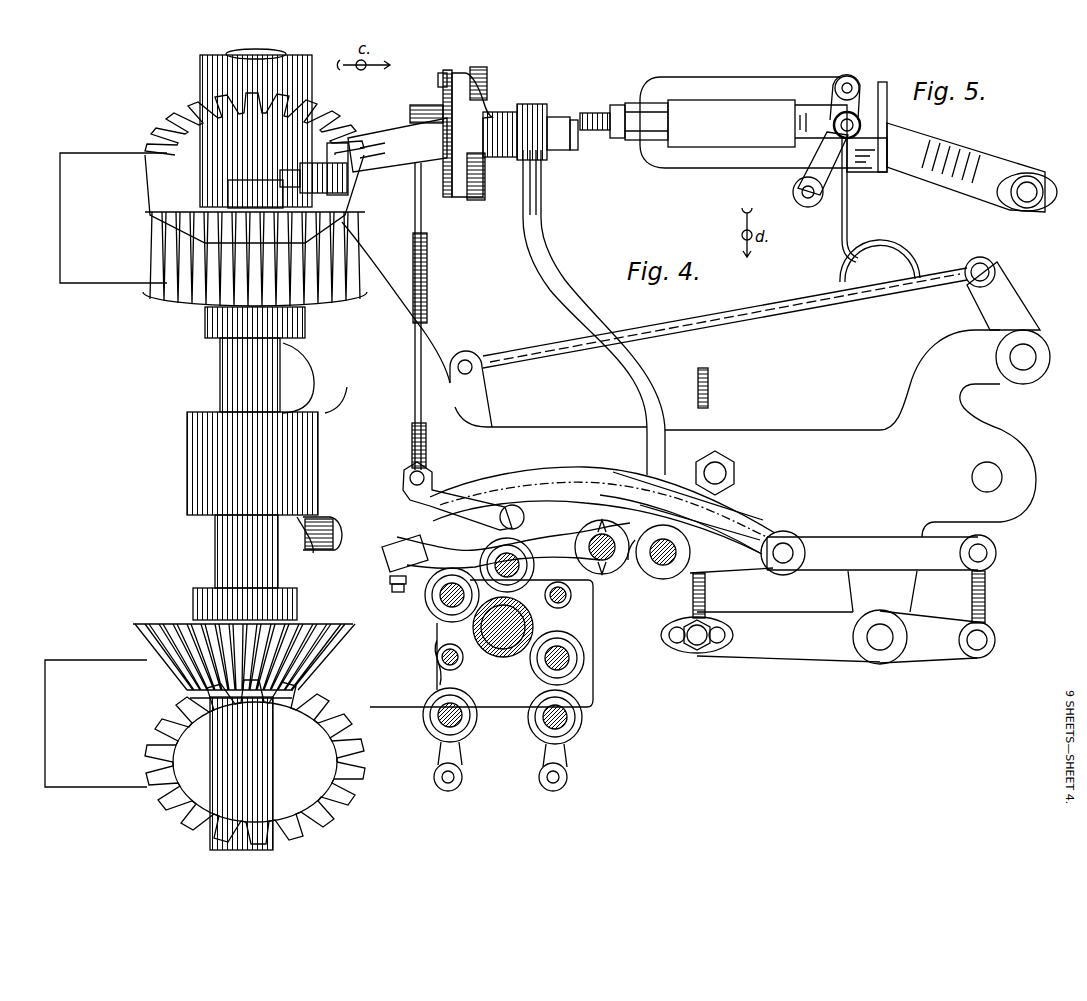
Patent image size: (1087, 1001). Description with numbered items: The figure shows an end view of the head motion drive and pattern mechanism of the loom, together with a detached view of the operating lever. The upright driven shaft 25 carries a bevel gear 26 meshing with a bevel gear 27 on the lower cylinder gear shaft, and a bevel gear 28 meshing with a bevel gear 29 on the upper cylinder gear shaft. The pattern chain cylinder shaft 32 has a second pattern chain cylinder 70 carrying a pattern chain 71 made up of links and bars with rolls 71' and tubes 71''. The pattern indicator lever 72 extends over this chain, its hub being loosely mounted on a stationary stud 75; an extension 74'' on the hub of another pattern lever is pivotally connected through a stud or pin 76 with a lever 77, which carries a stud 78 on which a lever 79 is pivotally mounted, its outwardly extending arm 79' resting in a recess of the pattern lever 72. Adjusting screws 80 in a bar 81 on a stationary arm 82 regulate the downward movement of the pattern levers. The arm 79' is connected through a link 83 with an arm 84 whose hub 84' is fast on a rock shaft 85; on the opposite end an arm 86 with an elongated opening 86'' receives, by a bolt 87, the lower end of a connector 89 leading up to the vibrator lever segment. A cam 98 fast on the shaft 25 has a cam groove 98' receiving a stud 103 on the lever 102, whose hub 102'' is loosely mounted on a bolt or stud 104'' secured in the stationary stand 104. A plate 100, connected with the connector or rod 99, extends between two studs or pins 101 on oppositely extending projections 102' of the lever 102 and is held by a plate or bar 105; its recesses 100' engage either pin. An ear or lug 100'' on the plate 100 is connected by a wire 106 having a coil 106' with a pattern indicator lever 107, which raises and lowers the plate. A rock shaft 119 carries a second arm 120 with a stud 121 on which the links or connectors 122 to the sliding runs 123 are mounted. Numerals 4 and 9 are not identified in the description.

In FIG. 4, the frame 4 is at (68, 250).
In FIG. 4, the opening 9 is at (998, 487).
In FIG. 4, the upright driven shaft 25 is at (232, 362).
In FIG. 4, the bevel gear 26 is at (170, 642).
In FIG. 4, the bevel gear 27 is at (140, 740).
In FIG. 4, the bevel gear 28 is at (180, 282).
In FIG. 4, the bevel gear 29 is at (167, 152).
In FIG. 4, the pattern chain cylinder shaft 32 is at (478, 632).
In FIG. 4, the second pattern chain cylinder 70 is at (470, 672).
In FIG. 4, the pattern chain 71 is at (495, 778).
In FIG. 4, the rolls 71' is at (503, 698).
In FIG. 4, the tubes 71'' is at (584, 612).
In FIG. 4, the pattern indicator lever 72 is at (450, 553).
In FIG. 4, the extension 74'' is at (621, 573).
In FIG. 4, the stationary stud 75 is at (600, 533).
In FIG. 4, the stud or pin 76 is at (665, 574).
In FIG. 4, the lever 77 is at (640, 510).
In FIG. 4, the stud 78 is at (780, 573).
In FIG. 4, the lever 79 is at (681, 512).
In FIG. 4, the outwardly extending arm 79' is at (718, 511).
In FIG. 4, the adjusting screws 80 is at (388, 588).
In FIG. 4, the bar 81 is at (385, 555).
In FIG. 4, the stationary arm 82 is at (487, 488).
In FIG. 4, the link 83 is at (982, 610).
In FIG. 4, the arm 84 is at (928, 655).
In FIG. 4, the hub 84' is at (925, 665).
In FIG. 4, the rock shaft 85 is at (865, 655).
In FIG. 4, the arm 86 is at (788, 650).
In FIG. 4, the elongated opening 86'' is at (686, 646).
In FIG. 4, the bolt 87 is at (690, 655).
In FIG. 4, the connector 89 is at (708, 385).
In FIG. 4, the cam 98 is at (231, 128).
In FIG. 4, the cam groove 98' is at (197, 201).
In FIG. 5, the connector or rod 99 is at (598, 112).
In FIG. 4, the plate 100 is at (511, 135).
In FIG. 5, the plate 100 is at (757, 113).
In FIG. 5, the recess 100' is at (852, 154).
In FIG. 4, the ear or lug 100'' is at (412, 102).
In FIG. 5, the ear or lug 100'' is at (878, 104).
In FIG. 4, the studs or pins 101 is at (445, 80).
In FIG. 5, the studs or pins 101 is at (855, 85).
In FIG. 4, the lever 102 is at (387, 151).
In FIG. 5, the lever 102 is at (972, 164).
In FIG. 4, the projections 102' is at (496, 123).
In FIG. 5, the projections 102' is at (812, 129).
In FIG. 4, the hub 102'' is at (522, 102).
In FIG. 4, the stud 103 is at (340, 173).
In FIG. 5, the stud 103 is at (1015, 195).
In FIG. 4, the stationary stand 104 is at (594, 312).
In FIG. 4, the bolt or stud 104'' is at (591, 141).
In FIG. 4, the plate or bar 105 is at (440, 90).
In FIG. 5, the plate or bar 105 is at (825, 100).
In FIG. 4, the wire 106 is at (397, 316).
In FIG. 5, the wire 106 is at (832, 200).
In FIG. 4, the coil 106' is at (446, 278).
In FIG. 5, the coil 106' is at (898, 255).
In FIG. 4, the pattern indicator lever 107 is at (412, 488).
In FIG. 4, the rock shaft 119 is at (1035, 362).
In FIG. 4, the second arm 120 is at (1010, 300).
In FIG. 4, the stud 121 is at (998, 265).
In FIG. 4, the links or connectors 122 is at (522, 355).
In FIG. 4, the sliding runs 123 is at (482, 412).